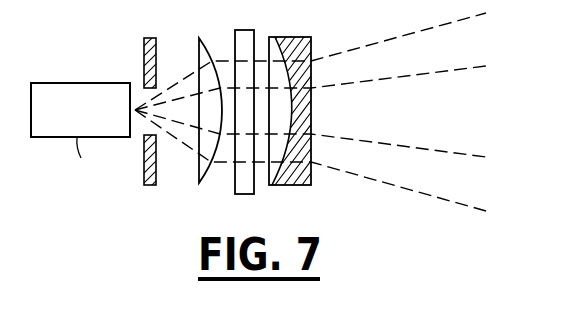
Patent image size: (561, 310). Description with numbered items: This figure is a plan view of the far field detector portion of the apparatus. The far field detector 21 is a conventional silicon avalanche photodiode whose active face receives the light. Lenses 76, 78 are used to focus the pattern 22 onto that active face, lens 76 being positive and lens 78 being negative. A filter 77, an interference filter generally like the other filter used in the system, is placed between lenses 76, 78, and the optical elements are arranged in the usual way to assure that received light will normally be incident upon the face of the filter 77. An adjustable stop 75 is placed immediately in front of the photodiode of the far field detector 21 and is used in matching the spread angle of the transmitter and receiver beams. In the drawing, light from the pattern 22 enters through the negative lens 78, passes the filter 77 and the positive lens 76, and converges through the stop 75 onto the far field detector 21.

The far field detector 21 is at (78, 82).
The pattern 22 is at (389, 60).
The adjustable stop 75 is at (144, 37).
The lens 76 is at (199, 37).
The filter 77 is at (240, 30).
The lens 78 is at (296, 37).